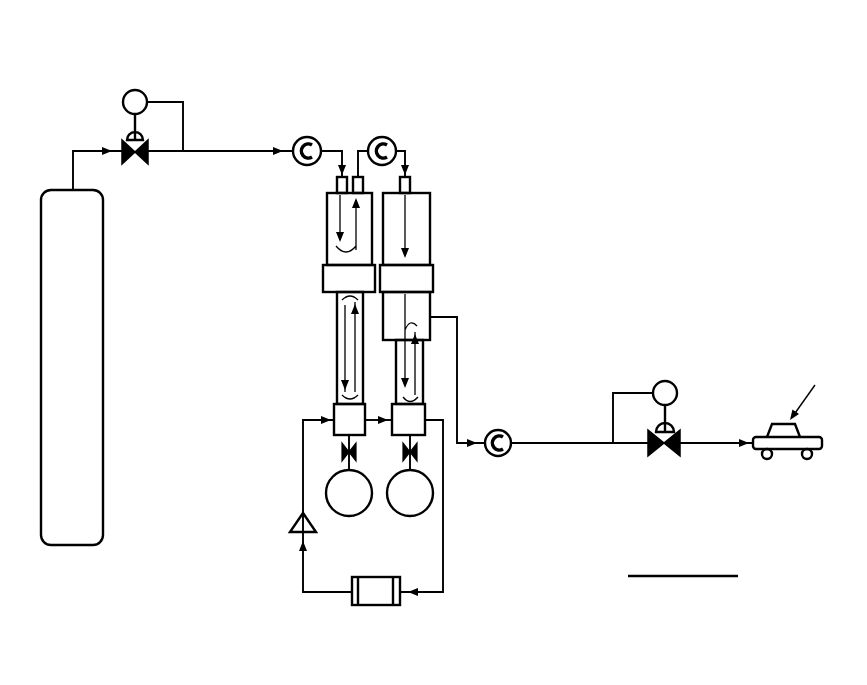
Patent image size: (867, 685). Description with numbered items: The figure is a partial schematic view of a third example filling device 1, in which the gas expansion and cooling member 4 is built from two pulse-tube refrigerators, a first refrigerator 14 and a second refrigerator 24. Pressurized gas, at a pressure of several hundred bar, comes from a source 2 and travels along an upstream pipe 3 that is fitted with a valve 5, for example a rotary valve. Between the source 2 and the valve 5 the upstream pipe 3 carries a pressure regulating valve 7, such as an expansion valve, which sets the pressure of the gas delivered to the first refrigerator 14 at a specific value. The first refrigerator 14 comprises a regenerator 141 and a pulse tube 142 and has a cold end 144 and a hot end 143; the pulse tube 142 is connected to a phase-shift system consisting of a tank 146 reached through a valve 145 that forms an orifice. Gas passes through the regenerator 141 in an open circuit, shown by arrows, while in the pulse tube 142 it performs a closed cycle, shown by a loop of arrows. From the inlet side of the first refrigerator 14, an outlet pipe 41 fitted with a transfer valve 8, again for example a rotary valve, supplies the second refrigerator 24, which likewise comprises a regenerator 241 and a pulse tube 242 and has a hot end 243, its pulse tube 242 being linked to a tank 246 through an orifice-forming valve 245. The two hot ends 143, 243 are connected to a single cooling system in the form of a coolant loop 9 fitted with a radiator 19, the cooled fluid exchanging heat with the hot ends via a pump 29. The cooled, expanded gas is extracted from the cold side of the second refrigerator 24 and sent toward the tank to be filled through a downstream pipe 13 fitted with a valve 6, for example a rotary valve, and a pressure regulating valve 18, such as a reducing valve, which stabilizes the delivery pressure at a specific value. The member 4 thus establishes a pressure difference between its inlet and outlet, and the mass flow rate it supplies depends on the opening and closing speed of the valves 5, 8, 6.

The installation 1 is at (488, 591).
The source of pressurized gas 2 is at (83, 372).
The upstream pipe 3 is at (245, 145).
The gas expansion and cooling member 4 is at (482, 165).
The valve 5 is at (305, 137).
The valve 6 is at (513, 430).
The pressure regulating valve 7 is at (131, 85).
The transfer valve 8 is at (380, 137).
The coolant loop 9 is at (297, 575).
The downstream pipe 13 is at (588, 436).
The first refrigerator 14 is at (316, 198).
The pressure regulating valve 18 is at (681, 391).
The radiator 19 is at (362, 605).
The second refrigerator 24 is at (492, 197).
The pump 29 is at (289, 538).
The outlet pipe 41 is at (414, 138).
The regenerator 141 is at (323, 231).
The pulse tube 142 is at (334, 355).
The hot end 143 is at (329, 411).
The cold end 144 is at (316, 286).
The valve 145 is at (338, 452).
The tank 146 is at (335, 492).
The regenerator 241 is at (438, 298).
The pulse tube 242 is at (431, 375).
The hot end 243 is at (431, 413).
The valve 245 is at (421, 459).
The tank 246 is at (418, 500).